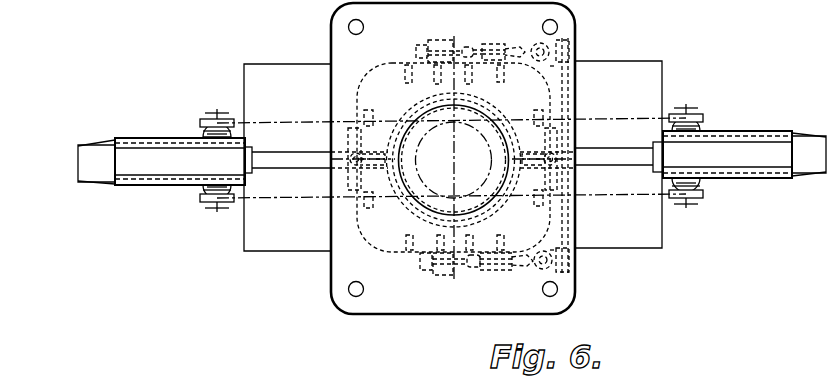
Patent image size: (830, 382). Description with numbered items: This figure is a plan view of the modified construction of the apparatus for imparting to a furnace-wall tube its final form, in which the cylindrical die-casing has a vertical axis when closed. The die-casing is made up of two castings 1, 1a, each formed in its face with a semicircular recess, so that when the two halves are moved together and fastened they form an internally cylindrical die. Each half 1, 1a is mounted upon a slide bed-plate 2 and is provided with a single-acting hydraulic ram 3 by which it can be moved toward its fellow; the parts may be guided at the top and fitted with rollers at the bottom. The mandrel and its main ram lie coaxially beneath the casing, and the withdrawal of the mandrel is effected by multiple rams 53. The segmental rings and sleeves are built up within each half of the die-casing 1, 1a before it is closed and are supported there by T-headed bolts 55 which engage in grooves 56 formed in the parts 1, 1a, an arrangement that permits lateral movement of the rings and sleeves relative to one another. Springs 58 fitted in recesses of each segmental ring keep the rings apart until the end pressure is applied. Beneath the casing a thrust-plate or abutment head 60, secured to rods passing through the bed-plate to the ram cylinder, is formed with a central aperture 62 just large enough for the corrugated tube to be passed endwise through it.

The casting 1 is at (386, 72).
The casting 1a is at (463, 171).
The slide bed-plate 2 is at (453, 156).
The hydraulic ram 3 is at (452, 158).
The multiple rams 53 is at (451, 159).
The T-headed bolt 55 is at (453, 161).
The groove 56 is at (364, 159).
The spring 58 is at (542, 158).
The thrust-plate 60 is at (469, 158).
The central aperture 62 is at (404, 184).